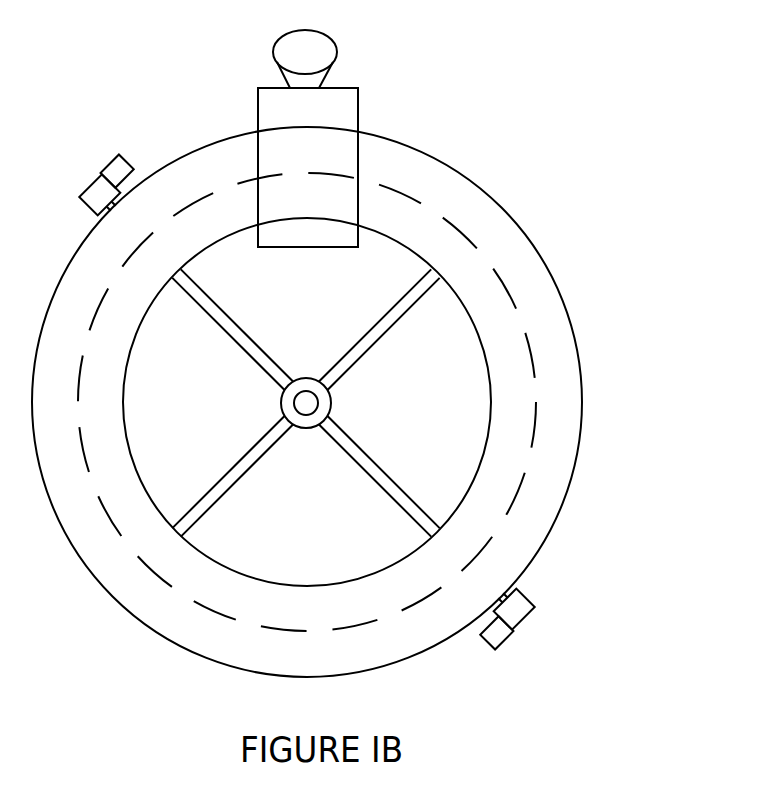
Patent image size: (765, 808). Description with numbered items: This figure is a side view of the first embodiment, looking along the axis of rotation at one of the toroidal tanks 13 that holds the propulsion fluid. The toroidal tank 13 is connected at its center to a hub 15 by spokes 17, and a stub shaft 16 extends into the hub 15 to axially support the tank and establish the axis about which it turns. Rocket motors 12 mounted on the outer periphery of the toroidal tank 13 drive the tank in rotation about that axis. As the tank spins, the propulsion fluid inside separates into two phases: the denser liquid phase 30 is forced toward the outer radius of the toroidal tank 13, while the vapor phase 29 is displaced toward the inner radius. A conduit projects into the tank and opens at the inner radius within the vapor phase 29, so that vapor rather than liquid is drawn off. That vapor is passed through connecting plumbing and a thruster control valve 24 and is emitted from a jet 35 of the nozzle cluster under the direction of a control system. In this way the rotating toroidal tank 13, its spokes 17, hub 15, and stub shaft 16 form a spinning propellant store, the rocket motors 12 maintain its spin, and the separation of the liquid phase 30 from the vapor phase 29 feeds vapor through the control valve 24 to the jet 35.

The rocket motor 12 is at (121, 152).
The toroidal tank 13 is at (468, 178).
The hub 15 is at (332, 405).
The stub shaft 16 is at (293, 401).
The spoke 17 is at (223, 317).
The thruster control valve 24 is at (343, 100).
The vapor phase 29 is at (473, 480).
The liquid phase 30 is at (522, 333).
The jet 35 is at (318, 42).